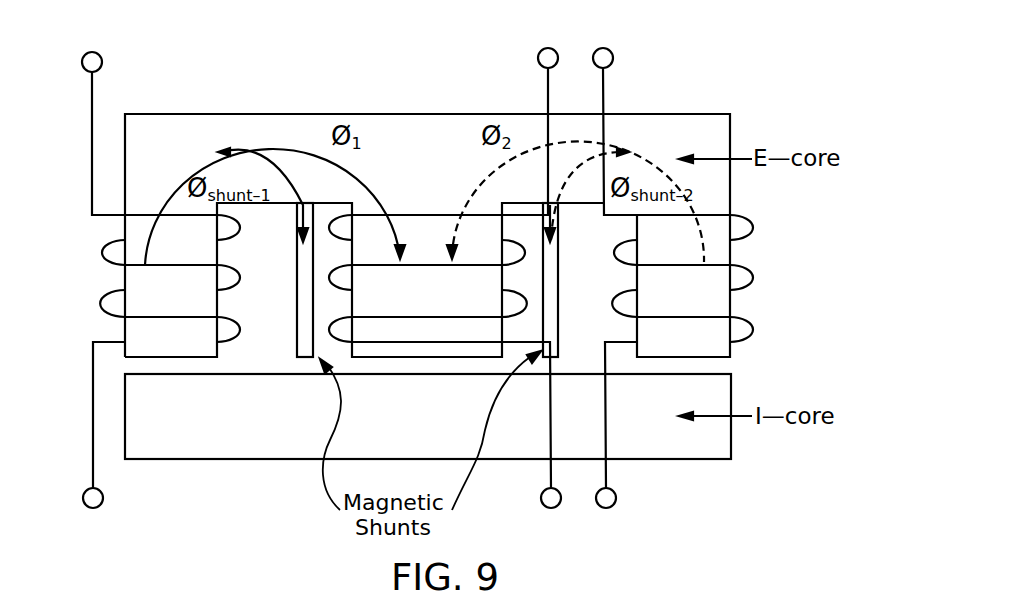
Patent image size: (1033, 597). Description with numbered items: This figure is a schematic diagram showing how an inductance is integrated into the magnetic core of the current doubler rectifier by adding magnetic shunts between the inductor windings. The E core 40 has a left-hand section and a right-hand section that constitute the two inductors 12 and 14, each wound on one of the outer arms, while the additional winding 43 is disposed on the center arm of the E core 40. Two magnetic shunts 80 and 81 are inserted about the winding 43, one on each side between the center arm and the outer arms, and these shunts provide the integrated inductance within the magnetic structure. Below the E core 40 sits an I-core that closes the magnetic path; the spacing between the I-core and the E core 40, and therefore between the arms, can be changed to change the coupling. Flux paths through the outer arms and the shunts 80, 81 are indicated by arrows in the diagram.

The inductor 12 is at (134, 215).
The inductor 14 is at (606, 90).
The E core 40 is at (258, 110).
The additional winding 43 is at (455, 213).
The magnetic shunt 80 is at (296, 352).
The magnetic shunt 81 is at (542, 350).